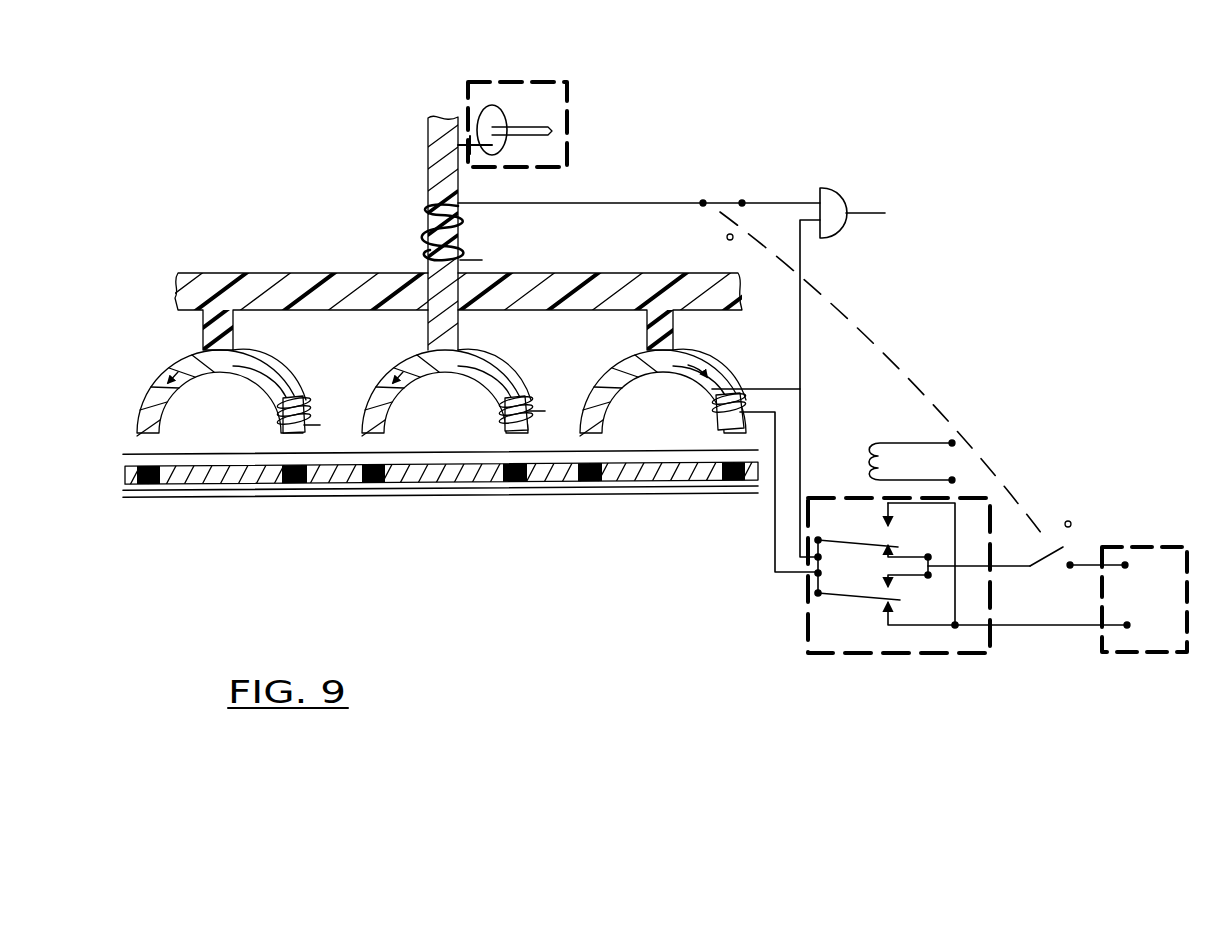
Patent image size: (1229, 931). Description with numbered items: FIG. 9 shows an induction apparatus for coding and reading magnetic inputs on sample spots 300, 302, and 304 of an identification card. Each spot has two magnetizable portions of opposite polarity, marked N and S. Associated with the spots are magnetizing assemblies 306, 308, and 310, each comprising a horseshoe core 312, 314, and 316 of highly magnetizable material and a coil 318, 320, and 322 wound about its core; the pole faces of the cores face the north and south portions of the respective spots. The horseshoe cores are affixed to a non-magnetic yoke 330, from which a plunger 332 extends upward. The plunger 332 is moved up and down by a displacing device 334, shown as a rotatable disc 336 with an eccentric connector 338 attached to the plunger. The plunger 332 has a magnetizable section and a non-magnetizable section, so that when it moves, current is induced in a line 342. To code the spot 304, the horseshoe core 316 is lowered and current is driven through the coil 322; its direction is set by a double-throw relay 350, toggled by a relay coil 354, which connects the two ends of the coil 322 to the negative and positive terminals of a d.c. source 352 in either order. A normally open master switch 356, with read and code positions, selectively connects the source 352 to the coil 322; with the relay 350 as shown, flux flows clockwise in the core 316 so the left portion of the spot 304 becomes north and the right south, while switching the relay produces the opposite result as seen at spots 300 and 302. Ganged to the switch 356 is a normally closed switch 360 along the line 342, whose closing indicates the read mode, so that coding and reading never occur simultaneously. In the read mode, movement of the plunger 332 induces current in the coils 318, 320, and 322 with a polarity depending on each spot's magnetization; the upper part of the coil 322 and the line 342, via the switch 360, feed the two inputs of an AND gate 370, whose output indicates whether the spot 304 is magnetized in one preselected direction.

The sample spot 300 is at (230, 497).
The sample spot 302 is at (433, 497).
The sample spot 304 is at (650, 496).
The magnetizing assembly 306 is at (137, 378).
The magnetizing assembly 308 is at (410, 357).
The magnetizing assembly 310 is at (618, 354).
The horseshoe core 312 is at (275, 375).
The horseshoe core 314 is at (482, 362).
The horseshoe core 316 is at (690, 348).
The coil 318 is at (300, 410).
The coil 320 is at (518, 400).
The coil 322 is at (708, 405).
The non-magnetic yoke 330 is at (320, 273).
The plunger 332 is at (445, 153).
The displacing device 334 is at (567, 93).
The rotatable disc 336 is at (496, 115).
The eccentric connector 338 is at (470, 100).
The line 342 is at (517, 204).
The double-throw relay 350 is at (905, 655).
The d.c. source 352 is at (1135, 547).
The relay coil 354 is at (916, 442).
The master switch 356 is at (1050, 548).
The normally closed switch 360 is at (703, 204).
The AND gate 370 is at (834, 206).